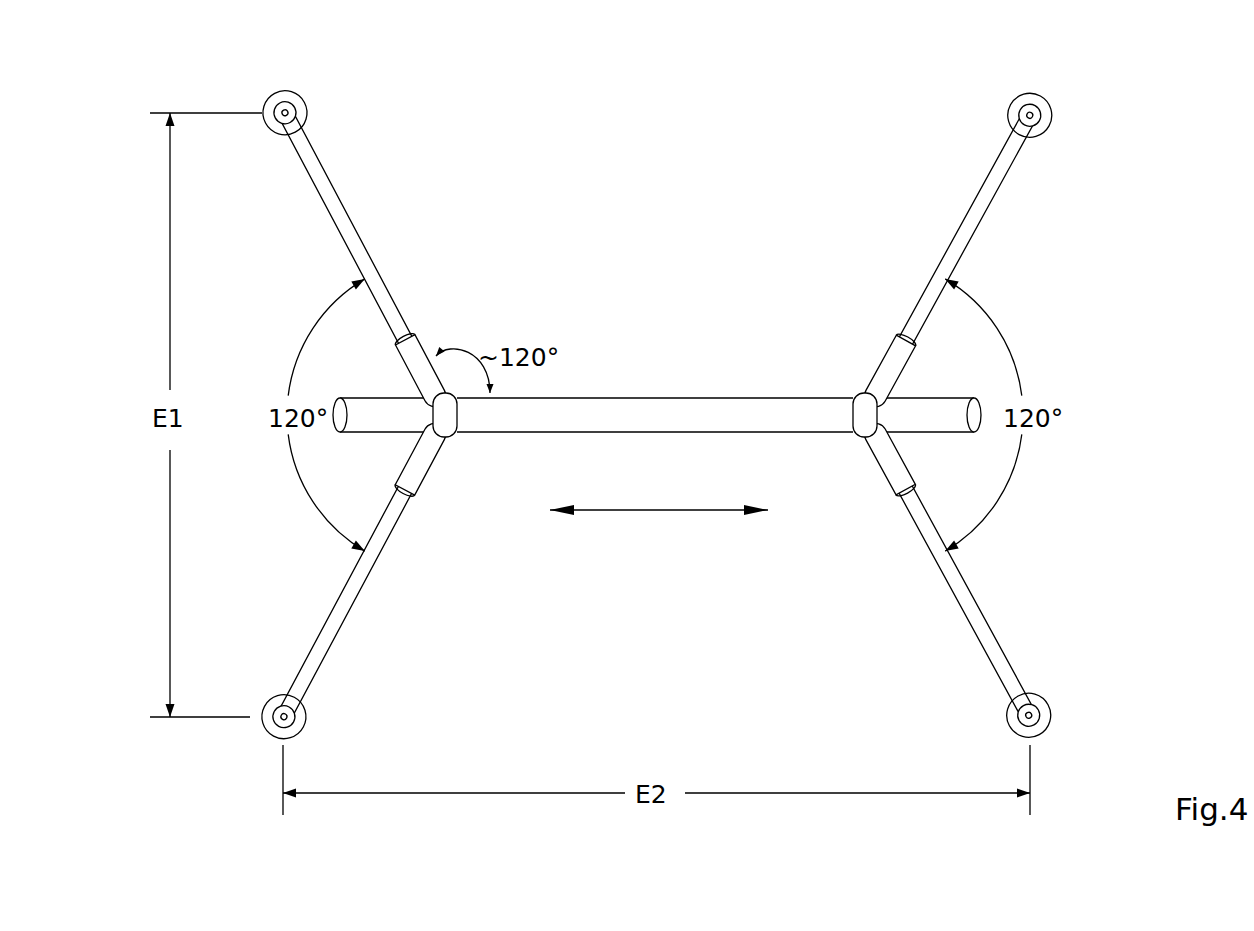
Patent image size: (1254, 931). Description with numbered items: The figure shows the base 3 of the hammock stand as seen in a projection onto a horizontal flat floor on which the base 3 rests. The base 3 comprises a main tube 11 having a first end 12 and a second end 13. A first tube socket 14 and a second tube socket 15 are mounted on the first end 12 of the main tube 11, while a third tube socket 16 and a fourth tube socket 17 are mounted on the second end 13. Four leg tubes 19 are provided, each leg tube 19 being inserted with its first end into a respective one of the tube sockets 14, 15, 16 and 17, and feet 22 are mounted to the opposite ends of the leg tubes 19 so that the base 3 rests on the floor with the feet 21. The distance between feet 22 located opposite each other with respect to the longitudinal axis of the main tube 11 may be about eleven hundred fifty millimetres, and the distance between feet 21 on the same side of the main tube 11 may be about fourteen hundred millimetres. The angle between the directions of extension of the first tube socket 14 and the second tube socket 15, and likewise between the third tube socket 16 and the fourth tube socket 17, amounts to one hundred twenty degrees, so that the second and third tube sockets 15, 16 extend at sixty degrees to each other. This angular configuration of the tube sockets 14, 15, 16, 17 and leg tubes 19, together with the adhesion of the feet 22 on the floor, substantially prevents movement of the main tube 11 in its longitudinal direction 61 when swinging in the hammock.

The base 3 is at (698, 394).
The main tube 11 is at (722, 395).
The first end 12 is at (832, 432).
The second end 13 is at (462, 433).
The first tube socket 14 is at (878, 473).
The second tube socket 15 is at (885, 345).
The third tube socket 16 is at (407, 378).
The fourth tube socket 17 is at (438, 463).
The leg tube 19 is at (363, 231).
The feet 21 is at (393, 433).
The feet 22 is at (305, 100).
The longitudinal direction 61 is at (650, 511).